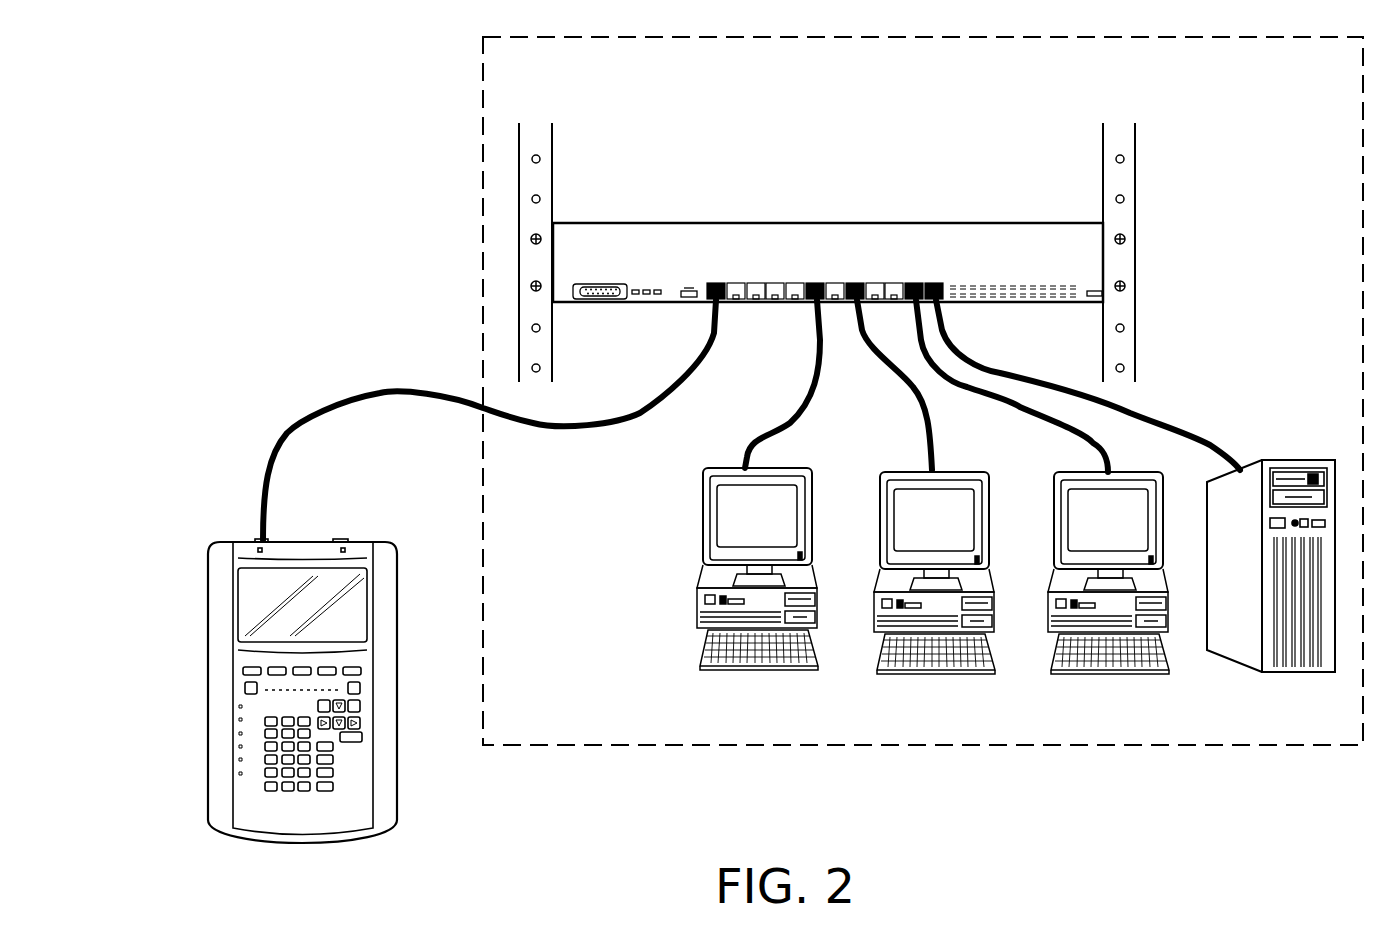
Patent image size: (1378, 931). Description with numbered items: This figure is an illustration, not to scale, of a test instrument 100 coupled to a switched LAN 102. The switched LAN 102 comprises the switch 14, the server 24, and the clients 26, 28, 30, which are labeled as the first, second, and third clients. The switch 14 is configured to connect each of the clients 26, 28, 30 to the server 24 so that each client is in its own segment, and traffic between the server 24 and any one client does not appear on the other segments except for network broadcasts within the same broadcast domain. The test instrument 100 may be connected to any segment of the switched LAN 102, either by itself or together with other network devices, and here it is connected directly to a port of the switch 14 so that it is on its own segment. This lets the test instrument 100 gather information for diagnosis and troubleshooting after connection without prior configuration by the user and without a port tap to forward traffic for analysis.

The switch 14 is at (780, 222).
The server 24 is at (1278, 458).
The client 26 is at (783, 467).
The client 28 is at (958, 470).
The client 30 is at (1128, 470).
The test instrument 100 is at (223, 543).
The switched LAN 102 is at (1345, 77).